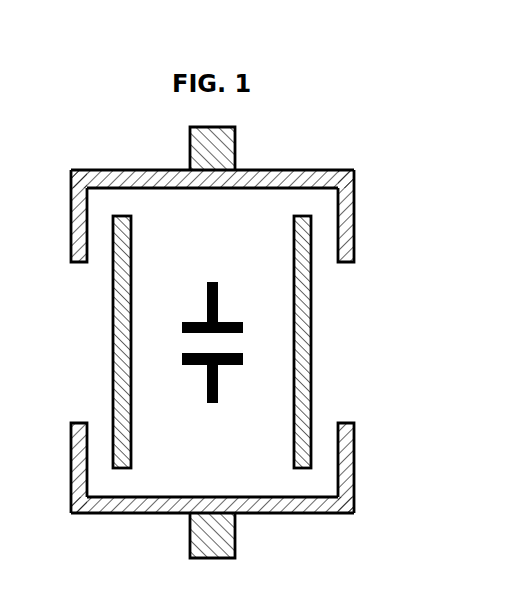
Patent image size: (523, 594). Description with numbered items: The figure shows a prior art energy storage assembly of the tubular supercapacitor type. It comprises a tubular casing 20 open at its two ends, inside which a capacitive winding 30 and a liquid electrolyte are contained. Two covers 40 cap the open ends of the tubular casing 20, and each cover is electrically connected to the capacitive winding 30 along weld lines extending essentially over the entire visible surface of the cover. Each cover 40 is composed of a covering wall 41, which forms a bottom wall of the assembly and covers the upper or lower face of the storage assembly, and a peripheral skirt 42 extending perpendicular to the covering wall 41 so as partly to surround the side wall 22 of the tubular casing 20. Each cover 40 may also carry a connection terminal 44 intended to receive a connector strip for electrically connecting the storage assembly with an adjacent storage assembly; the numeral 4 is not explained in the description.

The bottom plate of housing 4 is at (313, 505).
The tubular casing 20 is at (113, 341).
The side wall 22 is at (305, 342).
The capacitive winding 30 is at (220, 298).
The cover 40 is at (252, 345).
The covering wall 41 is at (137, 178).
The peripheral skirt 42 is at (348, 212).
The connection terminal 44 is at (236, 140).